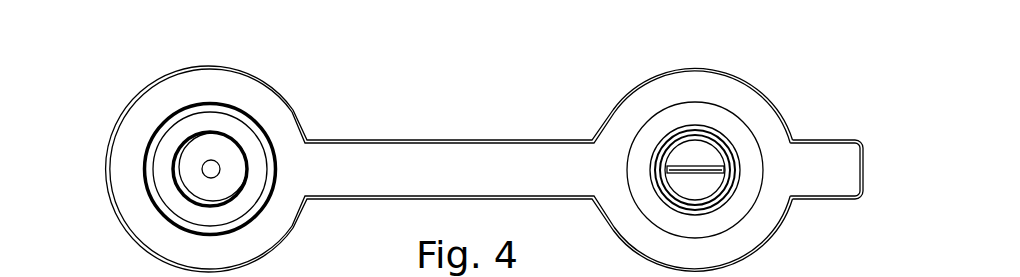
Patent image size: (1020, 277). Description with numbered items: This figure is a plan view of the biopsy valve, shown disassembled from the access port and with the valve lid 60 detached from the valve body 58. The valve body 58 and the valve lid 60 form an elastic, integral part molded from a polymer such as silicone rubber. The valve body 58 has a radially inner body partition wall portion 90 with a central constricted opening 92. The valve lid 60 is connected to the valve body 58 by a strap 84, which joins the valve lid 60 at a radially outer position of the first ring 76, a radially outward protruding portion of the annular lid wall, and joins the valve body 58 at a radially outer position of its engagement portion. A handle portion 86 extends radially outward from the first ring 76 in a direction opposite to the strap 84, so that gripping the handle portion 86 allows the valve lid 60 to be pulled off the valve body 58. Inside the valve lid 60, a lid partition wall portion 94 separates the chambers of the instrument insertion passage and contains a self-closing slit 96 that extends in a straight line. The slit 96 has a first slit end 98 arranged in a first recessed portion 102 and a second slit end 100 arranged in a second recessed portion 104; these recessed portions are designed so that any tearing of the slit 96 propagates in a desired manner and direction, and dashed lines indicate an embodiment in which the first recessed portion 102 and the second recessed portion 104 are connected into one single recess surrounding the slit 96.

The valve body 58 is at (103, 100).
The valve lid 60 is at (781, 80).
The first ring 76 is at (625, 122).
The strap 84 is at (443, 168).
The handle portion 86 is at (847, 160).
The body partition wall portion 90 is at (230, 160).
The central constricted opening 92 is at (209, 158).
The lid partition wall portion 94 is at (693, 160).
The self-closing slit 96 is at (700, 178).
The first slit end 98 is at (658, 178).
The second slit end 100 is at (728, 143).
The first recessed portion 102 is at (665, 137).
The second recessed portion 104 is at (727, 172).